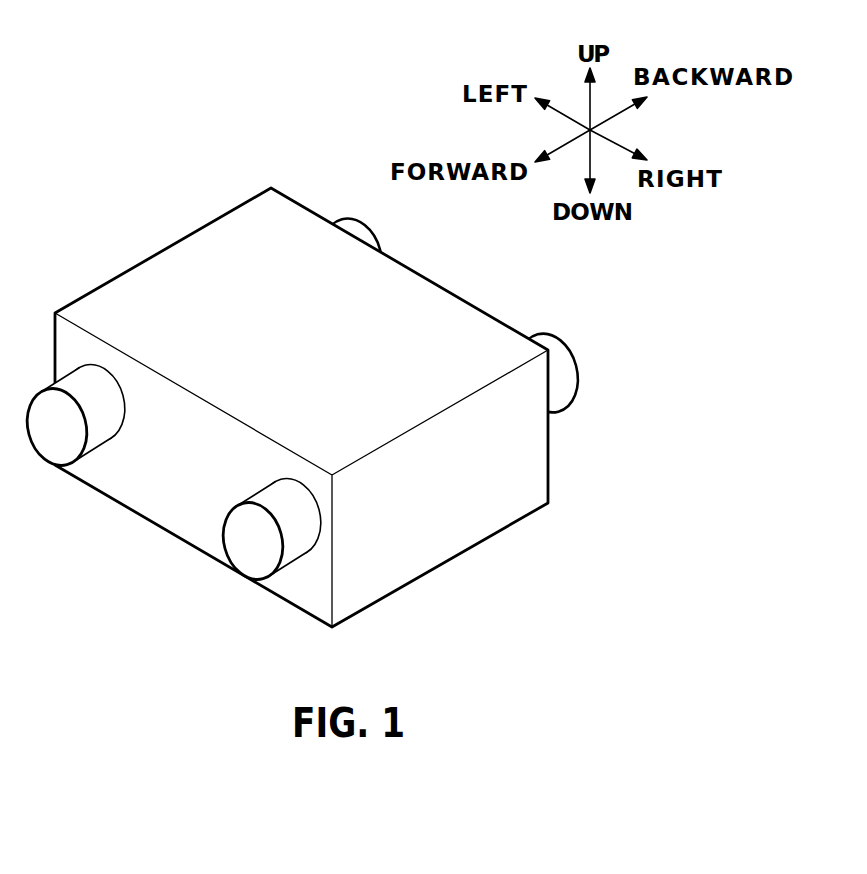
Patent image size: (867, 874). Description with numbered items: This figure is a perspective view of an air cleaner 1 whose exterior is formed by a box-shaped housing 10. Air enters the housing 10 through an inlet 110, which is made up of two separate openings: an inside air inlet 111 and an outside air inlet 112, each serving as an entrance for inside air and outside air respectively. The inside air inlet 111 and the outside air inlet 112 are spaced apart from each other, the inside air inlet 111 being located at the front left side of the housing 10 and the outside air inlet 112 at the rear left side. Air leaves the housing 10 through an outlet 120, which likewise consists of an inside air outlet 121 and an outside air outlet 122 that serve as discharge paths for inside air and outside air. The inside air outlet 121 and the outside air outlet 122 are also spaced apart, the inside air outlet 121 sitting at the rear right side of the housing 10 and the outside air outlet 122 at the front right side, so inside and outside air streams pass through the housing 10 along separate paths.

The air cleaner 1 is at (64, 25).
The housing 10 is at (412, 300).
The inlet 110 is at (287, 103).
The inside air inlet 111 is at (92, 380).
The outside air inlet 112 is at (343, 218).
The outlet 120 is at (655, 500).
The inside air outlet 121 is at (562, 398).
The outside air outlet 122 is at (307, 533).